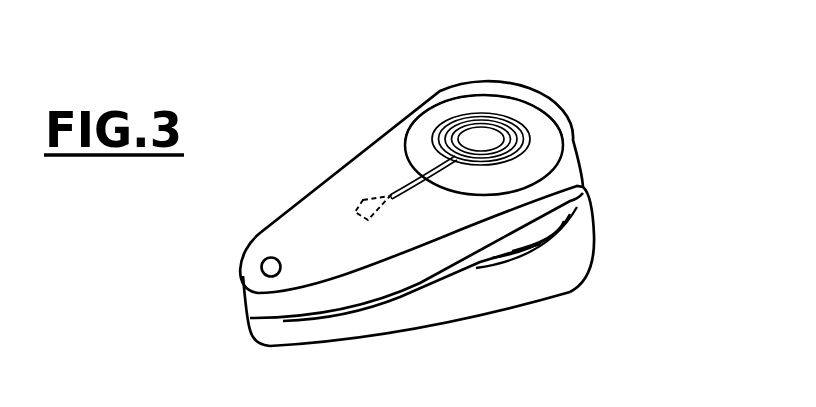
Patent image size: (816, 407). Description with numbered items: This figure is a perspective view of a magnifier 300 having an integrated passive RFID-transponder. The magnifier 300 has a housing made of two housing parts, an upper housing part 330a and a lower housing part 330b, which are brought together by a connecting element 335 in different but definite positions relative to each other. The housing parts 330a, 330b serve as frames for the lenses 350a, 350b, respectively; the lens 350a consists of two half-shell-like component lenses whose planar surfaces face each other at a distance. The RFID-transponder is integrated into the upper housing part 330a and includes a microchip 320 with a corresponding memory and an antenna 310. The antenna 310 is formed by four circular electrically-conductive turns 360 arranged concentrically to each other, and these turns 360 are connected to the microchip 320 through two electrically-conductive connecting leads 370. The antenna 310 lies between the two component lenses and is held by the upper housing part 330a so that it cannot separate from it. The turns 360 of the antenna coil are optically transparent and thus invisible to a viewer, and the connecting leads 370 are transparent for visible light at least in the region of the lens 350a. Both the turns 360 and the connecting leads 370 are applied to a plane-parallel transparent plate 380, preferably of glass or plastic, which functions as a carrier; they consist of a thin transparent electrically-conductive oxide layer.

The magnifier 300 is at (300, 238).
The antenna 310 is at (458, 112).
The microchip 320 is at (367, 203).
The upper housing part 330a is at (562, 120).
The lower housing part 330b is at (588, 254).
The connecting element 335 is at (261, 262).
The lens 350a is at (530, 111).
The lens 350b is at (530, 246).
The turns 360 is at (493, 160).
The connecting leads 370 is at (412, 194).
The plane-parallel transparent plate 380 is at (619, 405).